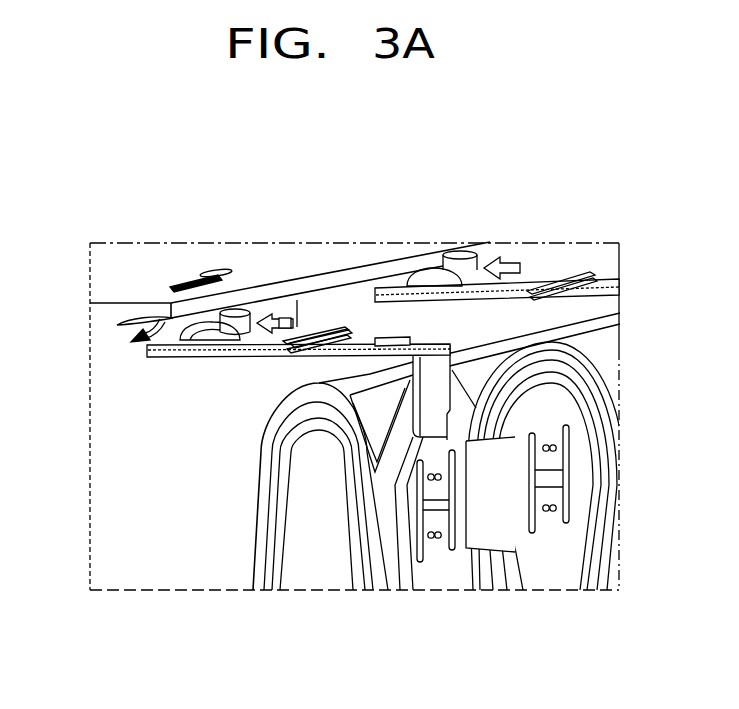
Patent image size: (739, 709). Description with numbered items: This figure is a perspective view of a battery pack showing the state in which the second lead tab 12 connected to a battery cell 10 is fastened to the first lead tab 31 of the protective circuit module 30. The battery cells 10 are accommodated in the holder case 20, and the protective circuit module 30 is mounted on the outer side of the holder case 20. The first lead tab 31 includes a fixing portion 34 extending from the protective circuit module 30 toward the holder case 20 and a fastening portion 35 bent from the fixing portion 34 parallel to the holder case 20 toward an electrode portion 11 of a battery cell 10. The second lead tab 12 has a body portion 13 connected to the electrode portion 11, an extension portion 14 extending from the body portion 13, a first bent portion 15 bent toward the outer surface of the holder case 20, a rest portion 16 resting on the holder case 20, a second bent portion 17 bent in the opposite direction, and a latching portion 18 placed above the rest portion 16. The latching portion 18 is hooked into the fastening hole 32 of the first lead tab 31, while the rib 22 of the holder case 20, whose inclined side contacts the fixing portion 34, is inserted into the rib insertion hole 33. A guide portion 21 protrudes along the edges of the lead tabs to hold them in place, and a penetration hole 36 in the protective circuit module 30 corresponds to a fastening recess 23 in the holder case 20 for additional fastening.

The battery cell 10 is at (312, 578).
The electrode portion 11 is at (388, 588).
The second lead tab 12 is at (452, 440).
The body portion 13 is at (450, 580).
The extension portion 14 is at (560, 392).
The first bent portion 15 is at (598, 330).
The rest portion 16 is at (388, 342).
The second bent portion 17 is at (340, 338).
The latching portion 18 is at (325, 329).
The holder case 20 is at (110, 523).
The guide portion 21 is at (278, 358).
The rib 22 is at (205, 357).
The fastening recess 23 is at (225, 312).
The protective circuit module 30 is at (113, 276).
The first lead tab 31 is at (284, 328).
The fastening hole 32 is at (300, 332).
The rib insertion hole 33 is at (245, 316).
The fixing portion 34 is at (140, 321).
The fastening portion 35 is at (263, 357).
The penetration hole 36 is at (215, 273).